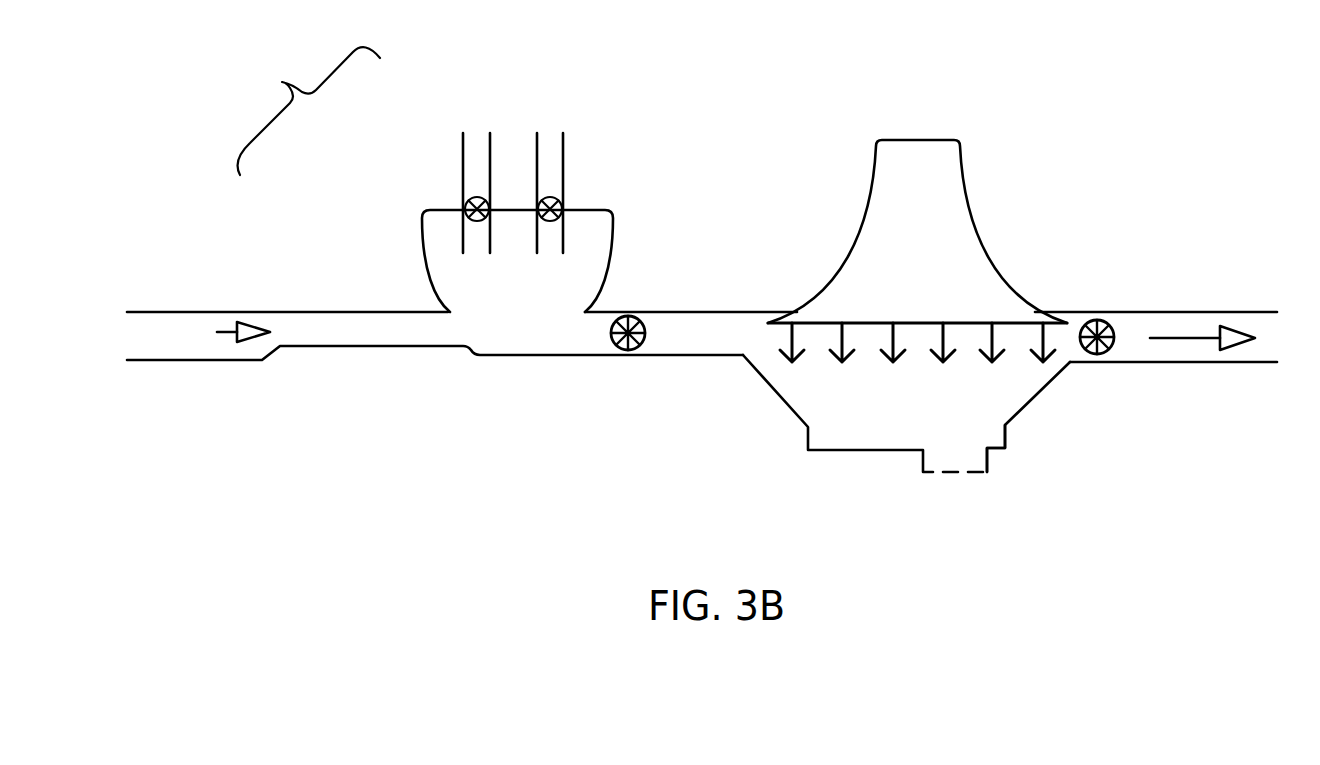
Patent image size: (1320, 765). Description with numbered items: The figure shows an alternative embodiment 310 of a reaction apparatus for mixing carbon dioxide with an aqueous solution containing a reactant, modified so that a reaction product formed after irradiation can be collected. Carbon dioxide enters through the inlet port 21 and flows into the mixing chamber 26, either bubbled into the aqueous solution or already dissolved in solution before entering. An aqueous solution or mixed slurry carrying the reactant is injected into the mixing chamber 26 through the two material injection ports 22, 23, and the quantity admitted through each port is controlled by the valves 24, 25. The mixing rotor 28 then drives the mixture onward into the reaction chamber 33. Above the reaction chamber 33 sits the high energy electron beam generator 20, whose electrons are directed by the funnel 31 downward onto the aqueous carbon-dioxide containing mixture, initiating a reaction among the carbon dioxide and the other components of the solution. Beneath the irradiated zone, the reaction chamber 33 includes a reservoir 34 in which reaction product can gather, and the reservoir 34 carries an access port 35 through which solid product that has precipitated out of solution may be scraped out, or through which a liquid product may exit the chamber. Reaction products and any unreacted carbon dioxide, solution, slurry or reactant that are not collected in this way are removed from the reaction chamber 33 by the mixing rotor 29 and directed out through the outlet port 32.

The alternative embodiment of the reaction apparatus 310 is at (291, 105).
The high energy electron beam generator 20 is at (970, 202).
The inlet port 21 is at (435, 309).
The material injection port 22 is at (476, 169).
The material injection port 23 is at (549, 169).
The valve 24 is at (451, 192).
The valve 25 is at (577, 192).
The mixing chamber 26 is at (517, 272).
The mixing rotor 28 is at (635, 308).
The mixing rotor 29 is at (1102, 363).
The funnel 31 is at (917, 319).
The outlet port 32 is at (1173, 314).
The reaction chamber 33 is at (906, 413).
The reservoir 34 is at (1010, 437).
The access port 35 is at (943, 477).